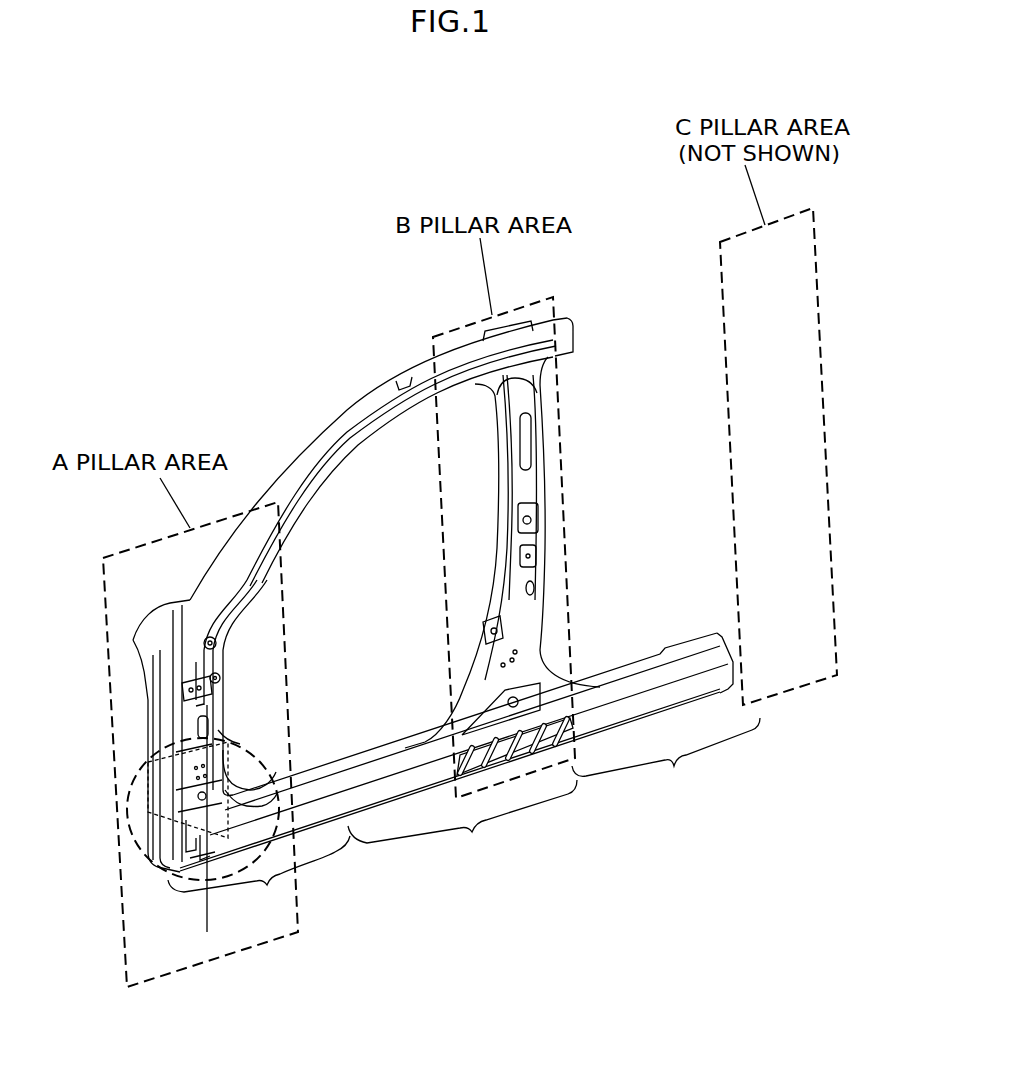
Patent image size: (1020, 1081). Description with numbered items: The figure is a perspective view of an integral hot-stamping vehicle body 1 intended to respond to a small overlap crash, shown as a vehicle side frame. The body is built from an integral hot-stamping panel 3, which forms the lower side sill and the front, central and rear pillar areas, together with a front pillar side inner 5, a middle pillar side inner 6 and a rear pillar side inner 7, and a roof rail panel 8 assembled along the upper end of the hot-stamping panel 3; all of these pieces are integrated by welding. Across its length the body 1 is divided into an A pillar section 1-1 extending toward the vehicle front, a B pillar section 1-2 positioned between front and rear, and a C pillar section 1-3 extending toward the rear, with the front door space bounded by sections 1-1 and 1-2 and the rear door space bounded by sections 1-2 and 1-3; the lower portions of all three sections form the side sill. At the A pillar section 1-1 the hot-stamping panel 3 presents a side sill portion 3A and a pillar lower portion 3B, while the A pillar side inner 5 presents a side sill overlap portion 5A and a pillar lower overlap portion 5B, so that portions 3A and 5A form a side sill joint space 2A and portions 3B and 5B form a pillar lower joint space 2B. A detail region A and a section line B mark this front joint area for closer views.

The integral hot-stamping vehicle body 1 is at (343, 378).
The roof rail panel 8 is at (423, 385).
The middle pillar side inner 6 is at (537, 502).
The rear pillar side inner 7 is at (625, 712).
The integral hot-stamping panel 3 is at (363, 753).
The side sill portion 3A is at (172, 835).
The pillar lower portion 3B is at (157, 773).
The side sill joint space 2A is at (212, 850).
The pillar lower joint space 2B is at (172, 762).
The front pillar side inner 5 is at (327, 592).
The side sill overlap portion 5A is at (238, 837).
The pillar lower overlap portion 5B is at (212, 763).
The detail region A is at (238, 743).
The section line B- B is at (207, 712).
The A pillar section 1-1 is at (259, 876).
The B pillar section 1-2 is at (462, 826).
The C pillar section 1-3 is at (666, 760).